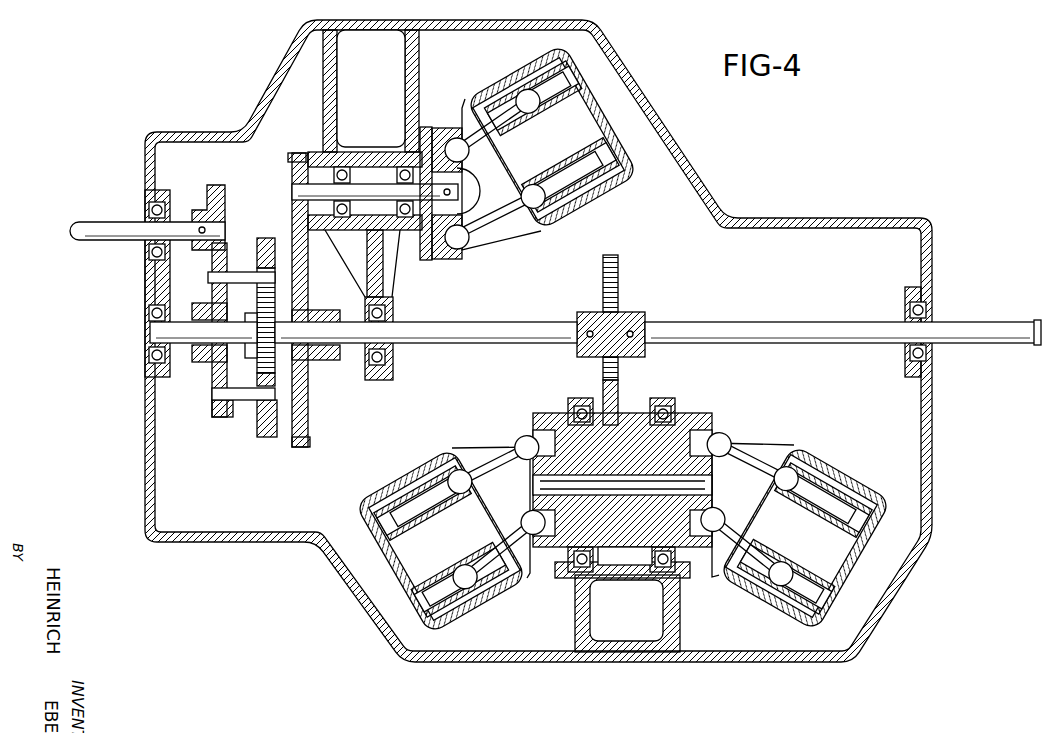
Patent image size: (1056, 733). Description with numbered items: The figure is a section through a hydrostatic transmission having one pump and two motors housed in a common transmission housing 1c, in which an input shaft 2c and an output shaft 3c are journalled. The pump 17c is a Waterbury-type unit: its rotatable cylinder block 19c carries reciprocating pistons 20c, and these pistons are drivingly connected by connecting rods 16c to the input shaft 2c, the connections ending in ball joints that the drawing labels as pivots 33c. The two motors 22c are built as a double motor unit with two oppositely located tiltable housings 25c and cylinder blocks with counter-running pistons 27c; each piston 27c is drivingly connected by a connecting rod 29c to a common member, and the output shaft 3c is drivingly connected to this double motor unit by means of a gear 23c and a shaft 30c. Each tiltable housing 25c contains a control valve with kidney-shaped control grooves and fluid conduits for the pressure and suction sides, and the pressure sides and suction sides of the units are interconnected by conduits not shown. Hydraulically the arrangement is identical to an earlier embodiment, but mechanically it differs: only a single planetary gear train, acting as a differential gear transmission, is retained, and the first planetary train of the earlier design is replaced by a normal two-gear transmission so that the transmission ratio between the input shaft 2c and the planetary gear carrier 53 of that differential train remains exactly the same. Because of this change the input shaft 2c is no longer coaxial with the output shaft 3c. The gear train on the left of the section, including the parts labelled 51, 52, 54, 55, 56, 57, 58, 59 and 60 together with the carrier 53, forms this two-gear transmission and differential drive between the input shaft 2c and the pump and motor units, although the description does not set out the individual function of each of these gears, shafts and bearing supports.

The transmission housing 1c is at (658, 118).
The input shaft 2c is at (90, 231).
The output shaft 3c is at (964, 322).
The connecting rods 16c is at (454, 126).
The pump 17c is at (541, 172).
The cylinder block 19c is at (553, 97).
The pistons 20c is at (514, 98).
The motor 22c is at (612, 515).
The gear 23c is at (618, 300).
The tiltable housing 25c is at (352, 526).
The pistons 27c is at (418, 497).
The connecting rods 29c is at (497, 452).
The shaft 30c is at (633, 432).
The pivots 33c is at (500, 470).
The gear train 51 is at (258, 299).
The gear 52 is at (222, 209).
The planetary gear carrier 53 is at (212, 303).
The shaft 54 is at (229, 272).
The gear hub 55 is at (272, 296).
The gear 56 is at (270, 314).
The gear 57 is at (263, 238).
The bearing support 58 is at (306, 451).
The bearing support flange 59 is at (303, 152).
The countershaft 60 is at (366, 184).